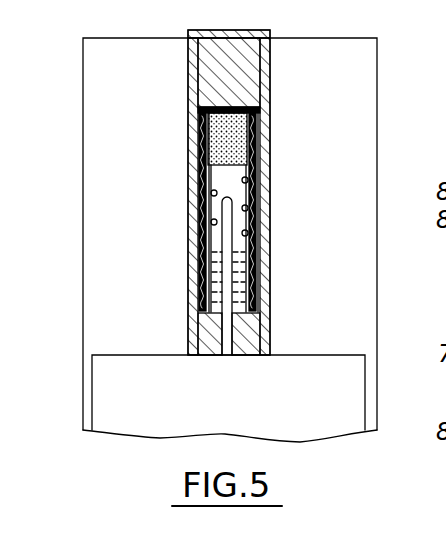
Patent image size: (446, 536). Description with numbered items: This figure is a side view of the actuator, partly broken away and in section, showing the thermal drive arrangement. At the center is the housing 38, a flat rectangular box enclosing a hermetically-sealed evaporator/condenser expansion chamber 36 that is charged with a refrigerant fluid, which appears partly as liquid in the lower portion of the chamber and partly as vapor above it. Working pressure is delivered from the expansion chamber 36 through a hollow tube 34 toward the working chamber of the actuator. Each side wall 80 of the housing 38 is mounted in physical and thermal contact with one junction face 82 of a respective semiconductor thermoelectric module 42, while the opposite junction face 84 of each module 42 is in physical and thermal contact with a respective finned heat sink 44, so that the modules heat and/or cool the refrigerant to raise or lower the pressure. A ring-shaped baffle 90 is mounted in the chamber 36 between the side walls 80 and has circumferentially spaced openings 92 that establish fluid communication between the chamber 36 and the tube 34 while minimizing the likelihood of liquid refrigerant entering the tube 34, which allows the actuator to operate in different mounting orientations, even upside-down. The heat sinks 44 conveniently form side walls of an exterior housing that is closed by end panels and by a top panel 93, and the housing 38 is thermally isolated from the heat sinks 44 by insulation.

The hollow tube 34 is at (226, 337).
The evaporator/condenser expansion chamber 36 is at (264, 150).
The housing 38 is at (265, 134).
The thermoelectric module 42 is at (262, 258).
The heat sink 44 is at (83, 52).
The side wall 80 is at (262, 288).
The junction face 82 is at (258, 117).
The opposite junction face 84 is at (262, 224).
The ring-shaped baffle 90 is at (200, 145).
The openings 92 is at (200, 216).
The top panel 93 is at (232, 30).